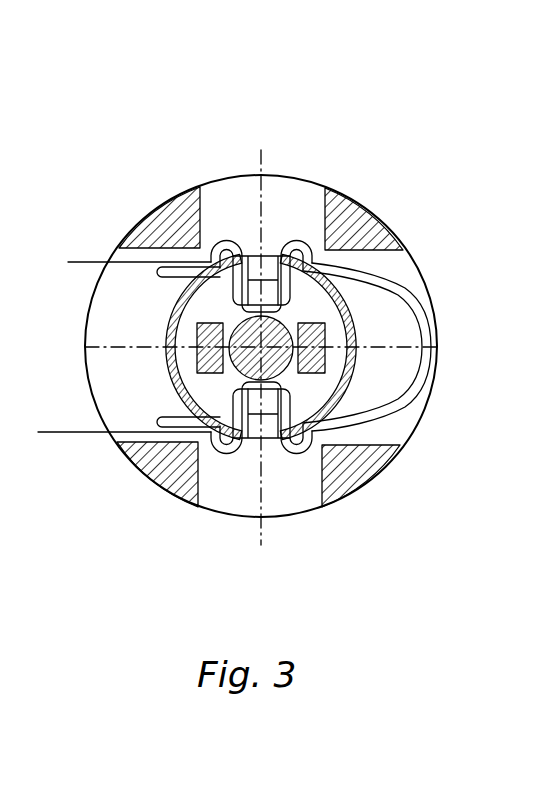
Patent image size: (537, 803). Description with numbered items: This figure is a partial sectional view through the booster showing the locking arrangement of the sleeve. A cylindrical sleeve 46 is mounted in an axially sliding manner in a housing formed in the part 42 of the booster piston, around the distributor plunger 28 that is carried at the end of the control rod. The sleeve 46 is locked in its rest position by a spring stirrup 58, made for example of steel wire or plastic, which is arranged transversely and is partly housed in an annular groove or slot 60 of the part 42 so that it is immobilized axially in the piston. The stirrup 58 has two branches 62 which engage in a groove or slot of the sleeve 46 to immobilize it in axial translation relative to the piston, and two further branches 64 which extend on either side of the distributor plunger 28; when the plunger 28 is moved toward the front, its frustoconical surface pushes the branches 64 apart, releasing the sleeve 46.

The distributor plunger 28 is at (197, 327).
The part of the booster piston 42 is at (401, 218).
The cylindrical sleeve 46 is at (176, 381).
The spring stirrup 58 is at (417, 290).
The annular groove or slot 60 is at (291, 197).
The branches of the stirrup 62 is at (112, 348).
The branches of the stirrup 64 is at (251, 256).